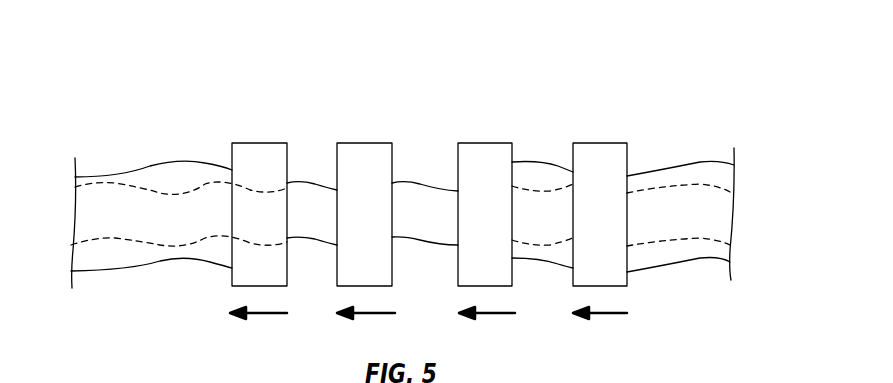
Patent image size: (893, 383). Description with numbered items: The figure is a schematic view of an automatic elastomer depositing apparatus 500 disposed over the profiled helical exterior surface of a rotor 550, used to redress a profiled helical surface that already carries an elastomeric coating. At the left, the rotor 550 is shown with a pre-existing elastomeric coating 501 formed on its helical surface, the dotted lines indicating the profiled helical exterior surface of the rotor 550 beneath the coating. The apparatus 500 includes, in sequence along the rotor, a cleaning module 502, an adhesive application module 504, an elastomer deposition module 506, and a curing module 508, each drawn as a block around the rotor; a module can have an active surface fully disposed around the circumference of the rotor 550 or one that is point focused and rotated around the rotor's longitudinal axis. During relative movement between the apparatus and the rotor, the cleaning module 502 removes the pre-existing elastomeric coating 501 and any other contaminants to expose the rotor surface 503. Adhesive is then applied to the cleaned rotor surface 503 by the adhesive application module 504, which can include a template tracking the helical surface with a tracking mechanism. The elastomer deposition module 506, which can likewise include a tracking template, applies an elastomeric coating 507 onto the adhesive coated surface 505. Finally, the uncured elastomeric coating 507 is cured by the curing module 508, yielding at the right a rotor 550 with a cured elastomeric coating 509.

The automatic elastomer depositing apparatus 500 is at (424, 161).
The pre-existing elastomeric coating 501 is at (178, 160).
The cleaning module 502 is at (258, 143).
The rotor surface 503 is at (325, 182).
The adhesive application module 504 is at (362, 143).
The adhesive coated surface 505 is at (433, 190).
The elastomer deposition module 506 is at (484, 143).
The elastomeric coating 507 is at (533, 162).
The curing module 508 is at (600, 143).
The cured elastomeric coating 509 is at (687, 162).
The rotor 550 is at (725, 215).